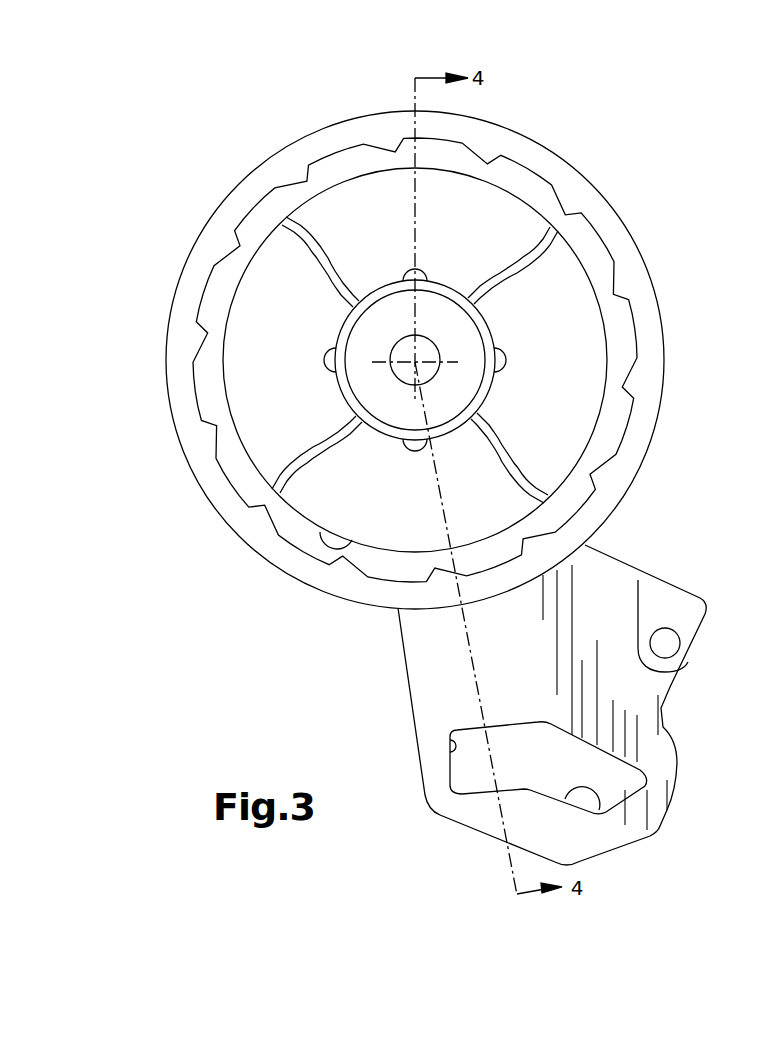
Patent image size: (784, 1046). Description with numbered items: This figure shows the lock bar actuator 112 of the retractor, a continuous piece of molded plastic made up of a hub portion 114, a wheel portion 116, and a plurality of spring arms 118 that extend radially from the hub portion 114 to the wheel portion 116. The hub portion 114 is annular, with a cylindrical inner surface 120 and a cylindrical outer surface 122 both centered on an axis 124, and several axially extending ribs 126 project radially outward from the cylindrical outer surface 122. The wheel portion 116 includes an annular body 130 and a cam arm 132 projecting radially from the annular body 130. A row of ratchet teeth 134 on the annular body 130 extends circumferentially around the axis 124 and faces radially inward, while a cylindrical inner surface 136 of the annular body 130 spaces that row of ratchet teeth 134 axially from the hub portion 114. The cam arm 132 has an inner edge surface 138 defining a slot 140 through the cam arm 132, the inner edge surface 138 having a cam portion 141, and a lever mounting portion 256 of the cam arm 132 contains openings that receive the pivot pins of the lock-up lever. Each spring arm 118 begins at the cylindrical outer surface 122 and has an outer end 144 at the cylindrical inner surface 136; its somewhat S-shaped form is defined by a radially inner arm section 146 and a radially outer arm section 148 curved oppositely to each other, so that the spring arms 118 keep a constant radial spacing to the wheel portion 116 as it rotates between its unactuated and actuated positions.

The lock bar actuator 112 is at (214, 150).
The hub portion 114 is at (380, 278).
The wheel portion 116 is at (213, 196).
The spring arms 118 is at (314, 259).
The cylindrical inner surface 120 is at (475, 392).
The cylindrical outer surface 122 is at (451, 289).
The axis 124 is at (398, 371).
The axially extending ribs 126 is at (510, 357).
The annular body 130 is at (186, 338).
The cam arm 132 is at (412, 701).
The ratchet teeth 134 is at (215, 427).
The cylindrical inner surface 136 is at (313, 540).
The inner edge surface 138 is at (450, 746).
The slot 140 is at (455, 784).
The cam portion 141 is at (605, 807).
The outer end 144 is at (283, 222).
The radially inner arm section 146 is at (345, 312).
The radially outer arm section 148 is at (303, 236).
The lever mounting portion 256 is at (655, 607).